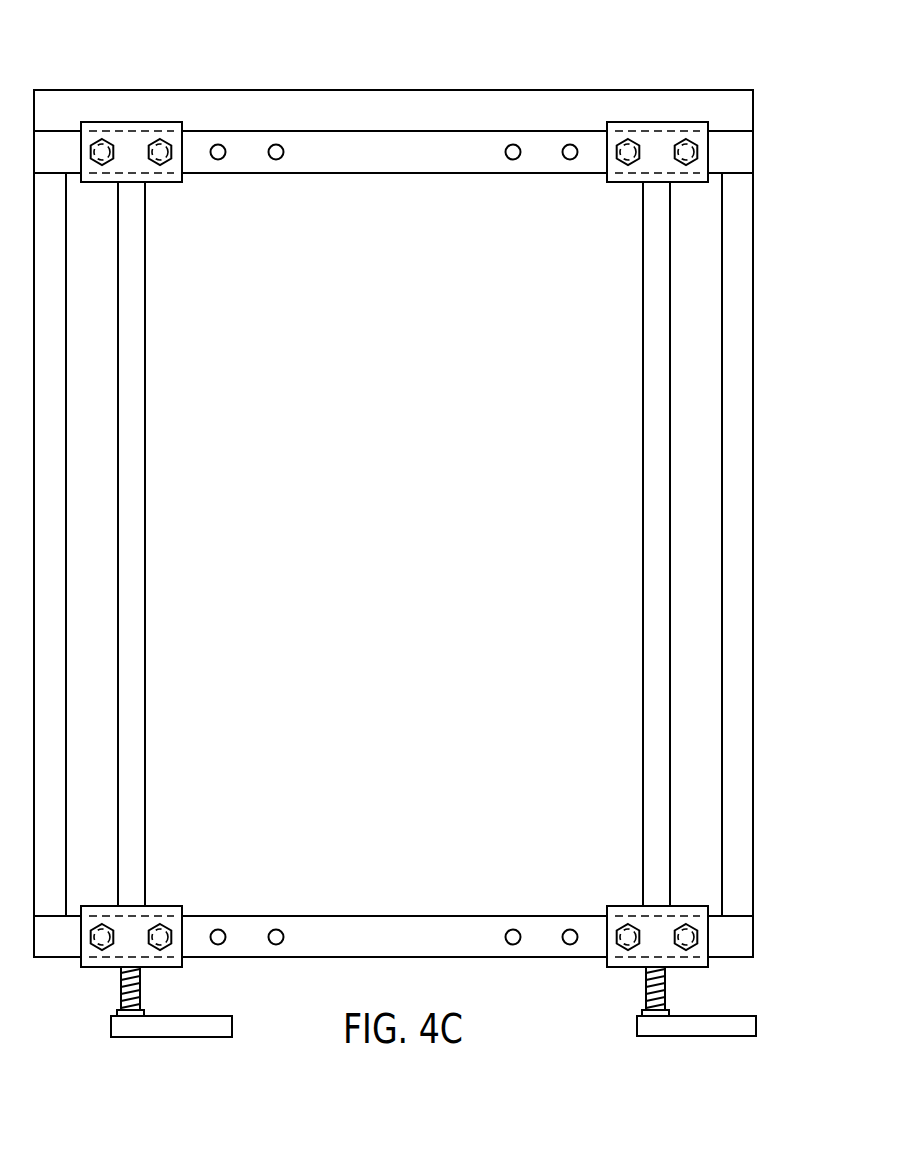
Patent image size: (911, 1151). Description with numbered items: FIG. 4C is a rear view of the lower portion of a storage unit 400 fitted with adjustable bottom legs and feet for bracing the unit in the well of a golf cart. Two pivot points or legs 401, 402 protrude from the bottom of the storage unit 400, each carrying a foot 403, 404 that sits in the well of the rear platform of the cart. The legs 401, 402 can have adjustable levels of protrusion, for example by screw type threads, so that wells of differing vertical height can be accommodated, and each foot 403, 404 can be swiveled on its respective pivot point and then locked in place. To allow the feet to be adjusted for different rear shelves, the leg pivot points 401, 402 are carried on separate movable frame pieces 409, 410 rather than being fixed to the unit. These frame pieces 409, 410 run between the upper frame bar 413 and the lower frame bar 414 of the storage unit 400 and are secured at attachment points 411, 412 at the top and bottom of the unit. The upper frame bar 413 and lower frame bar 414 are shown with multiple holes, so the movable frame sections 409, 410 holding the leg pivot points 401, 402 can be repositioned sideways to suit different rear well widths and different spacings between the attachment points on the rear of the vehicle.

The storage unit 400 is at (298, 68).
The leg 401 is at (121, 990).
The leg 402 is at (646, 990).
The foot 403 is at (171, 1037).
The foot 404 is at (695, 1036).
The movable frame piece 409 is at (131, 608).
The movable frame piece 410 is at (657, 608).
The attachment point 411 is at (657, 122).
The attachment point 412 is at (624, 906).
The upper frame bar 413 is at (394, 131).
The lower frame bar 414 is at (394, 916).